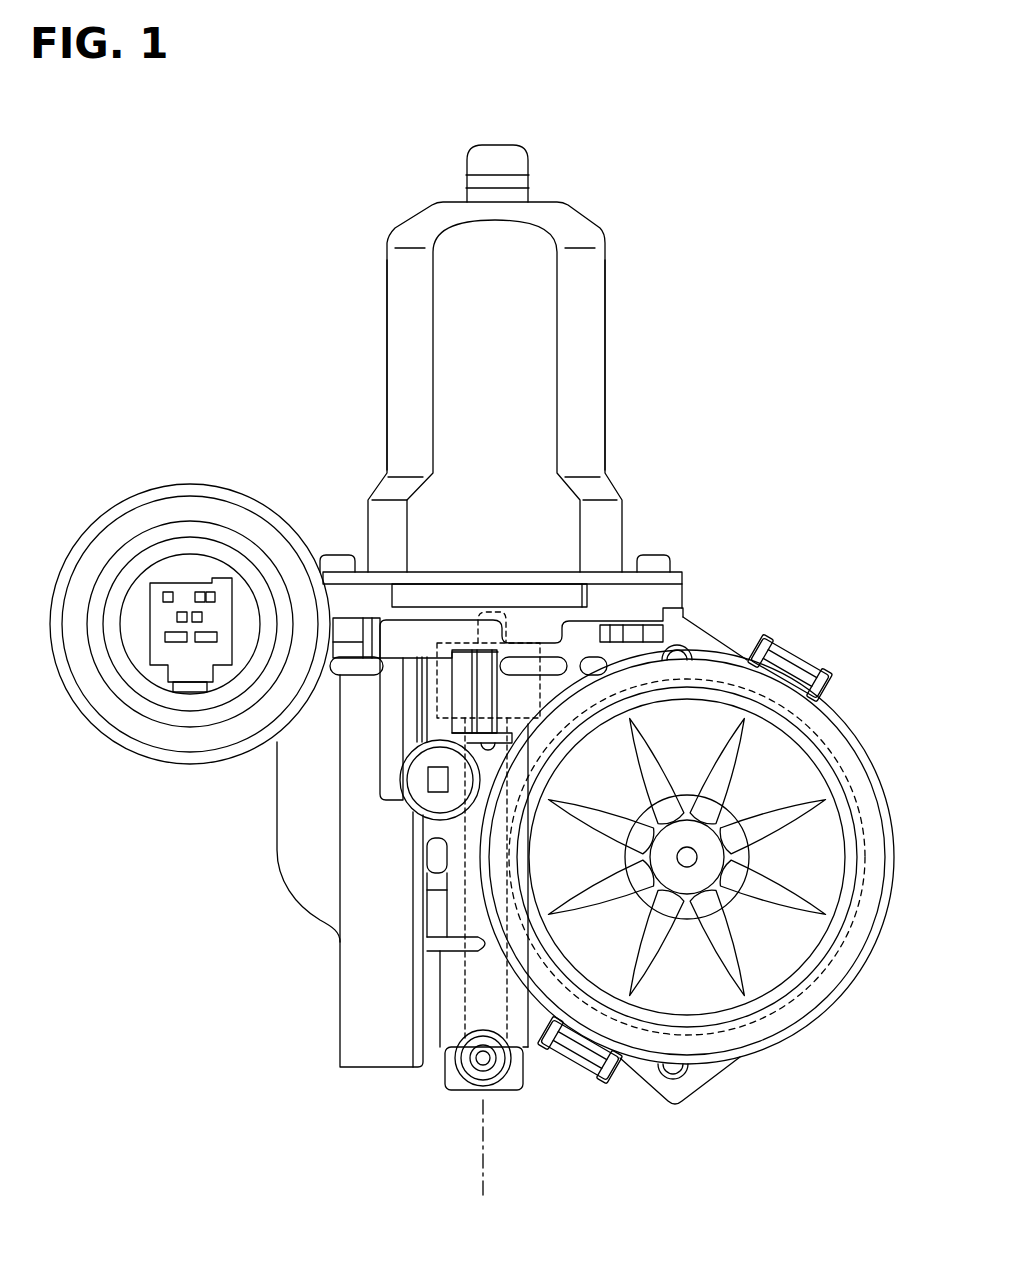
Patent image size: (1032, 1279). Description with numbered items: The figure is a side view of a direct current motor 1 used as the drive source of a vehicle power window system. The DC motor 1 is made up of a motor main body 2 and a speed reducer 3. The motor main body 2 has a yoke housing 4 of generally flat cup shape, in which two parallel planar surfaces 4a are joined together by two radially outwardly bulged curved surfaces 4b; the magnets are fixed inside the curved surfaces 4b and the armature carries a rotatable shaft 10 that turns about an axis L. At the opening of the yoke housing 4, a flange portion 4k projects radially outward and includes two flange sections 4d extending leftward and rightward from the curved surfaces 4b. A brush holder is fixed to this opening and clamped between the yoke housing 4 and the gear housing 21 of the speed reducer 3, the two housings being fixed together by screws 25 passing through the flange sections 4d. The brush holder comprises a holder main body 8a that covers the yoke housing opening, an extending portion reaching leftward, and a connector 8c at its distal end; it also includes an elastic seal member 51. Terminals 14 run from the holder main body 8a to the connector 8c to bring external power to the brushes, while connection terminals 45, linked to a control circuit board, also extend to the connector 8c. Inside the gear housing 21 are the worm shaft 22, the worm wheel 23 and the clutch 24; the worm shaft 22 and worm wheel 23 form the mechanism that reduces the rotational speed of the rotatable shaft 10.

The DC motor 1 is at (313, 168).
The motor main body 2 is at (585, 216).
The speed reducer 3 is at (283, 880).
The yoke housing 4 is at (605, 285).
The planar surface 4a is at (456, 247).
The curved surface 4b is at (387, 332).
The flange section 4d is at (684, 579).
The flange portion 4k is at (690, 568).
The holder main body 8a is at (443, 592).
The connector 8c is at (106, 513).
The rotatable shaft 10 is at (478, 643).
The terminal 14 is at (198, 588).
The gear housing 21 is at (782, 638).
The worm shaft 22 is at (468, 992).
The worm wheel 23 is at (815, 718).
The clutch 24 is at (523, 643).
The screw 25 is at (338, 555).
The connection terminal 45 is at (177, 640).
The seal member 51 is at (489, 595).
The axis L is at (483, 1135).